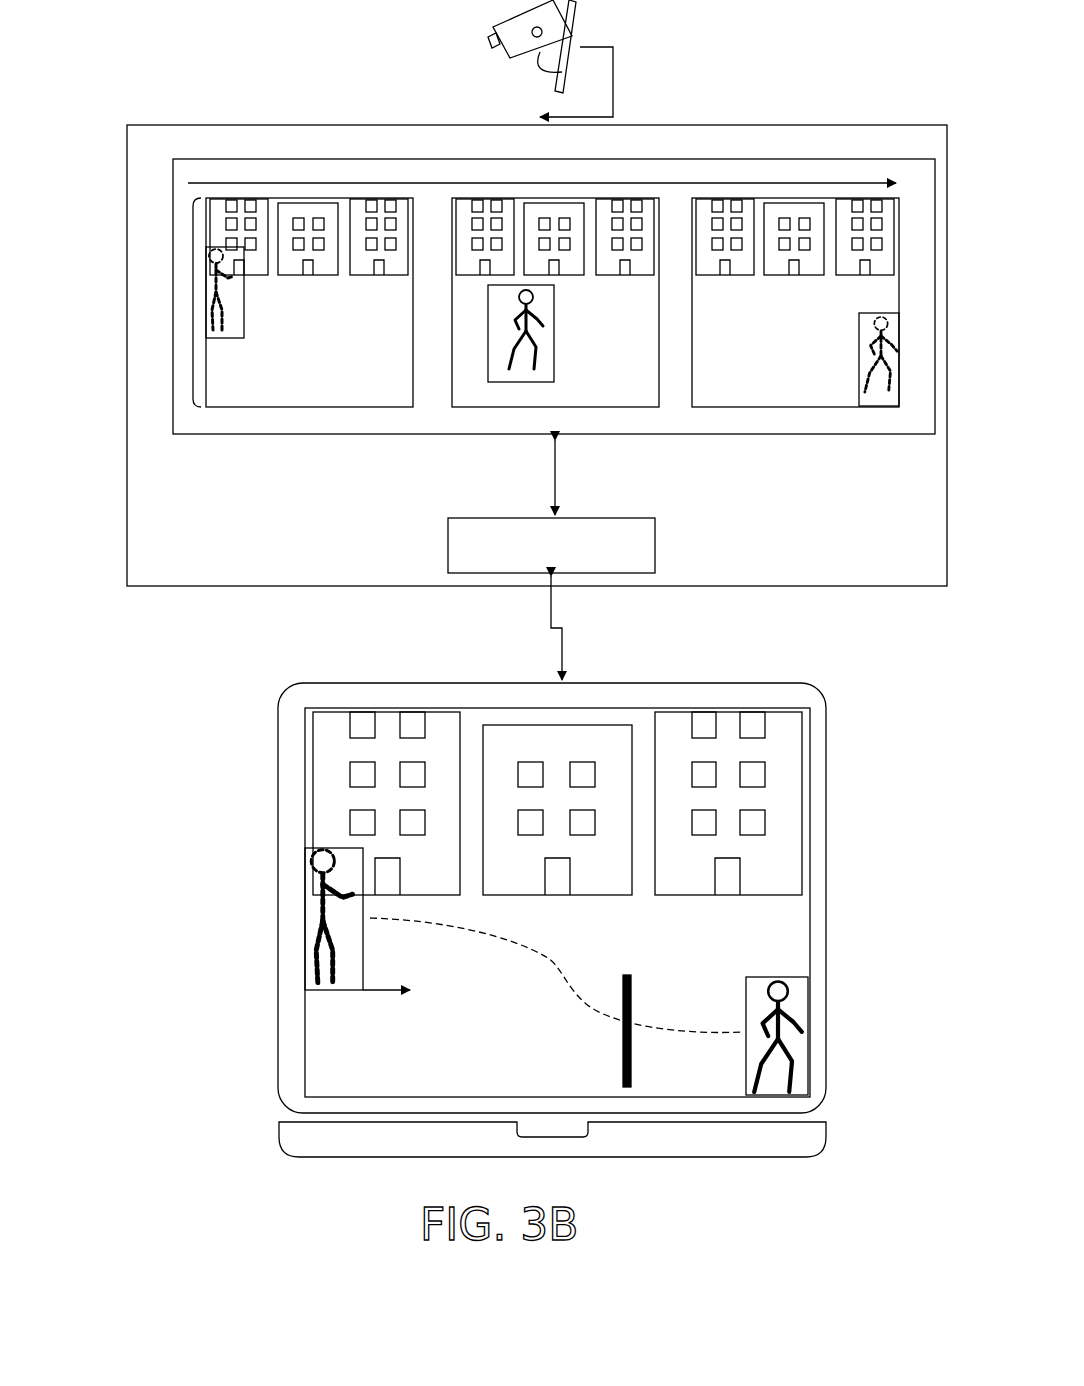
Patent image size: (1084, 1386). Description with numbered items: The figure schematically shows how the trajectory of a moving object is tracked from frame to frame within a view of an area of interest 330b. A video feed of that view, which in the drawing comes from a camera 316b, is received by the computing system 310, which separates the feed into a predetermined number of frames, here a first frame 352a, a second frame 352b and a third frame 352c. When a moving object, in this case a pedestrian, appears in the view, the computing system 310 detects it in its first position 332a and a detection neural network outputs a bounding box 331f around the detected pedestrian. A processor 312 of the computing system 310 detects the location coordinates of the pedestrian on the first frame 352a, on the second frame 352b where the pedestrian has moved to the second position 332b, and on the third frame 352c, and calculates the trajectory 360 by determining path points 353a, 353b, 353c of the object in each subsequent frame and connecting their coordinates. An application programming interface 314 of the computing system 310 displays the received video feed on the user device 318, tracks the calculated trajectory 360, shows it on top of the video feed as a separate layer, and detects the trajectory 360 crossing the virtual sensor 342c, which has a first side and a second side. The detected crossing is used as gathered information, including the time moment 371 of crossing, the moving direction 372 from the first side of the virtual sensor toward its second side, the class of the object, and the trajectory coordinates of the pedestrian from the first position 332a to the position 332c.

The computing system 310 is at (735, 133).
The processor 312 is at (803, 170).
The application programming interface (API) 314 is at (635, 548).
The camera 316b is at (548, 35).
The user device 318 is at (823, 812).
The area of interest 330b is at (184, 296).
The bounding box 331f is at (244, 307).
The first position 332a is at (213, 305).
The second position 332b is at (510, 337).
The second position (end position of trajectory) 332c is at (882, 377).
The virtual sensor 342c is at (622, 1047).
The first frame 352a is at (330, 392).
The second frame 352b is at (648, 402).
The third frame 352c is at (790, 407).
The path point 353a is at (230, 340).
The path point 353b is at (530, 382).
The path point 353c is at (893, 403).
The trajectory 360 is at (545, 983).
The time moment 371 is at (237, 158).
The moving direction 372 is at (380, 993).